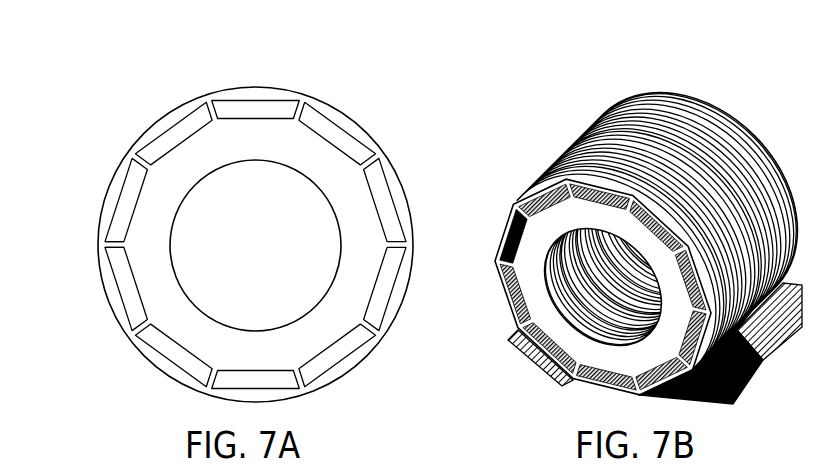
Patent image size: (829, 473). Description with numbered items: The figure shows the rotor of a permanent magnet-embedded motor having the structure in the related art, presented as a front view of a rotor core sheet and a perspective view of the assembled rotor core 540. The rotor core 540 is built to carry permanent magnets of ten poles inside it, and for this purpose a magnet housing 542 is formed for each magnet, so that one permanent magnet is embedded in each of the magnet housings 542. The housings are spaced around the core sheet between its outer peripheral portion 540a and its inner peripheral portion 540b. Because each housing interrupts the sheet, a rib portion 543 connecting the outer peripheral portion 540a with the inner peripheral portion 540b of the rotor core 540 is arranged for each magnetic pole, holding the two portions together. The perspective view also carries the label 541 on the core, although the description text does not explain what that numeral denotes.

In FIG. 7B, the rotor core 540 is at (575, 44).
In FIG. 7A, the stator core 541 is at (156, 44).
In FIG. 7B, the stator core 541 is at (567, 281).
In FIG. 7A, the magnet housing 542 is at (347, 130).
In FIG. 7B, the magnet housing 542 is at (533, 194).
In FIG. 7A, the rib portion 543 is at (117, 268).
In FIG. 7B, the rib portion 543 is at (533, 331).
In FIG. 7A, the outer peripheral portion of the rotor core 540a is at (110, 287).
In FIG. 7A, the inner peripheral portion of the rotor core 540b is at (153, 198).